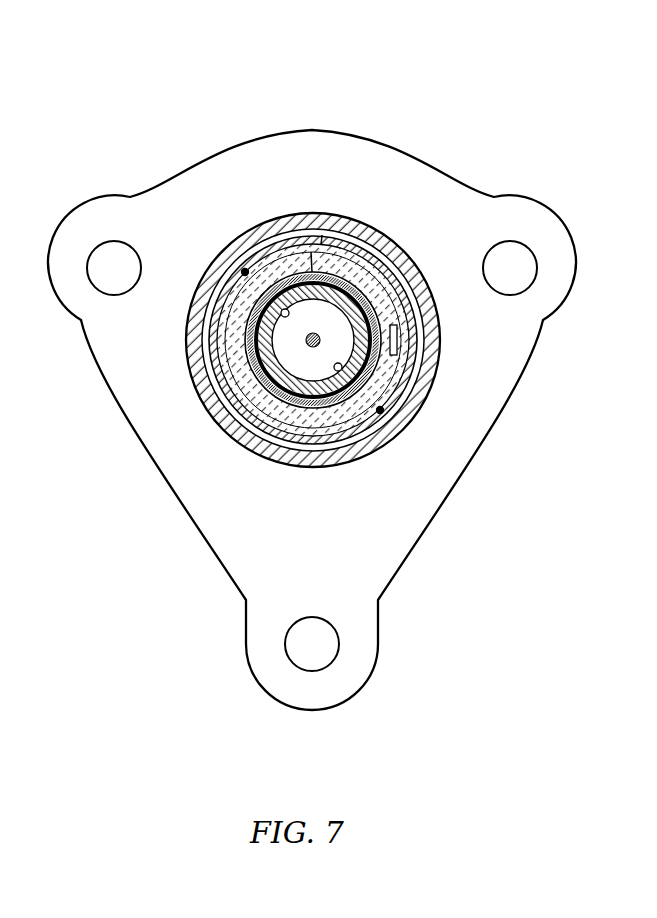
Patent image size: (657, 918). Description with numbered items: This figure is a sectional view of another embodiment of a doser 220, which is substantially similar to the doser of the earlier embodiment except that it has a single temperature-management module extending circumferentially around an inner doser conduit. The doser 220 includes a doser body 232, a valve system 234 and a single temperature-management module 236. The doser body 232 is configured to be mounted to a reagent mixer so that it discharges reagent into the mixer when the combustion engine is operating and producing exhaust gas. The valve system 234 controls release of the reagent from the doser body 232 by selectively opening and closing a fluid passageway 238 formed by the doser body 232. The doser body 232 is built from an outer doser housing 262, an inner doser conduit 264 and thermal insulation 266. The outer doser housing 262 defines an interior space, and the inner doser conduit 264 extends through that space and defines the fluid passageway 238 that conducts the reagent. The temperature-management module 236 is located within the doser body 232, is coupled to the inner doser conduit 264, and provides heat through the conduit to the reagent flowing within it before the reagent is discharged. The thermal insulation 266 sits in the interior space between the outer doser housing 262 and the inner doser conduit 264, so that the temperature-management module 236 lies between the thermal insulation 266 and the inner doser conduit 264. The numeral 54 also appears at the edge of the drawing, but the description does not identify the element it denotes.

The doser 220 is at (471, 91).
The doser body 232 is at (419, 231).
The valve system 234 is at (325, 319).
The temperature-management module 236 is at (358, 380).
The fluid passageway 238 is at (296, 350).
The outer doser housing 262 is at (282, 223).
The inner doser conduit 264 is at (360, 337).
The thermal insulation 266 is at (398, 313).
The conduit 54 is at (0, 64).